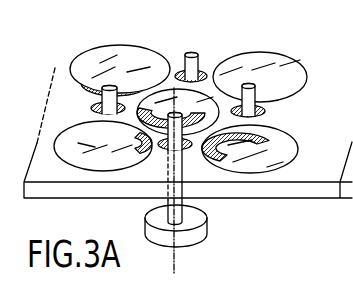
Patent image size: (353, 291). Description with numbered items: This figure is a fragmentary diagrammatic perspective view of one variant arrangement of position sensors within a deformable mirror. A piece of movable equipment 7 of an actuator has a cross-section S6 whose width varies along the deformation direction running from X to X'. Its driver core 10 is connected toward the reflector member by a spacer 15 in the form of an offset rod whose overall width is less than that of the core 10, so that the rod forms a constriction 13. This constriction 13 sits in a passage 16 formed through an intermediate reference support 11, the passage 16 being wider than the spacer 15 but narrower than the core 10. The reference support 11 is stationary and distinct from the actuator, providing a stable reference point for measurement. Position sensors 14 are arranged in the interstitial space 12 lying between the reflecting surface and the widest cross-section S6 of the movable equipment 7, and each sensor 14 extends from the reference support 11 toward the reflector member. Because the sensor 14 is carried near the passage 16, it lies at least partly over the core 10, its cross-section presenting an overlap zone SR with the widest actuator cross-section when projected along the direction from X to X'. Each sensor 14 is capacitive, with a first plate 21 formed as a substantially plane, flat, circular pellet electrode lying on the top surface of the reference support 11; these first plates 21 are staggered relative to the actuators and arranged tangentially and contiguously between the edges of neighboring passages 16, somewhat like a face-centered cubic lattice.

The movable equipment 7 is at (138, 229).
The driver core 10 is at (200, 220).
The intermediate reference support 11 is at (278, 190).
The interstitial space 12 is at (304, 97).
The constriction 13 is at (207, 64).
The position sensor 14 is at (153, 71).
The spacer 15 is at (108, 85).
The passage 16 is at (177, 71).
The first plate 21 is at (117, 55).
The overlap zone SR is at (216, 152).
The cross-section of the actuator S6 is at (186, 226).
The deformation direction X is at (180, 182).
The deformation direction X' is at (184, 101).